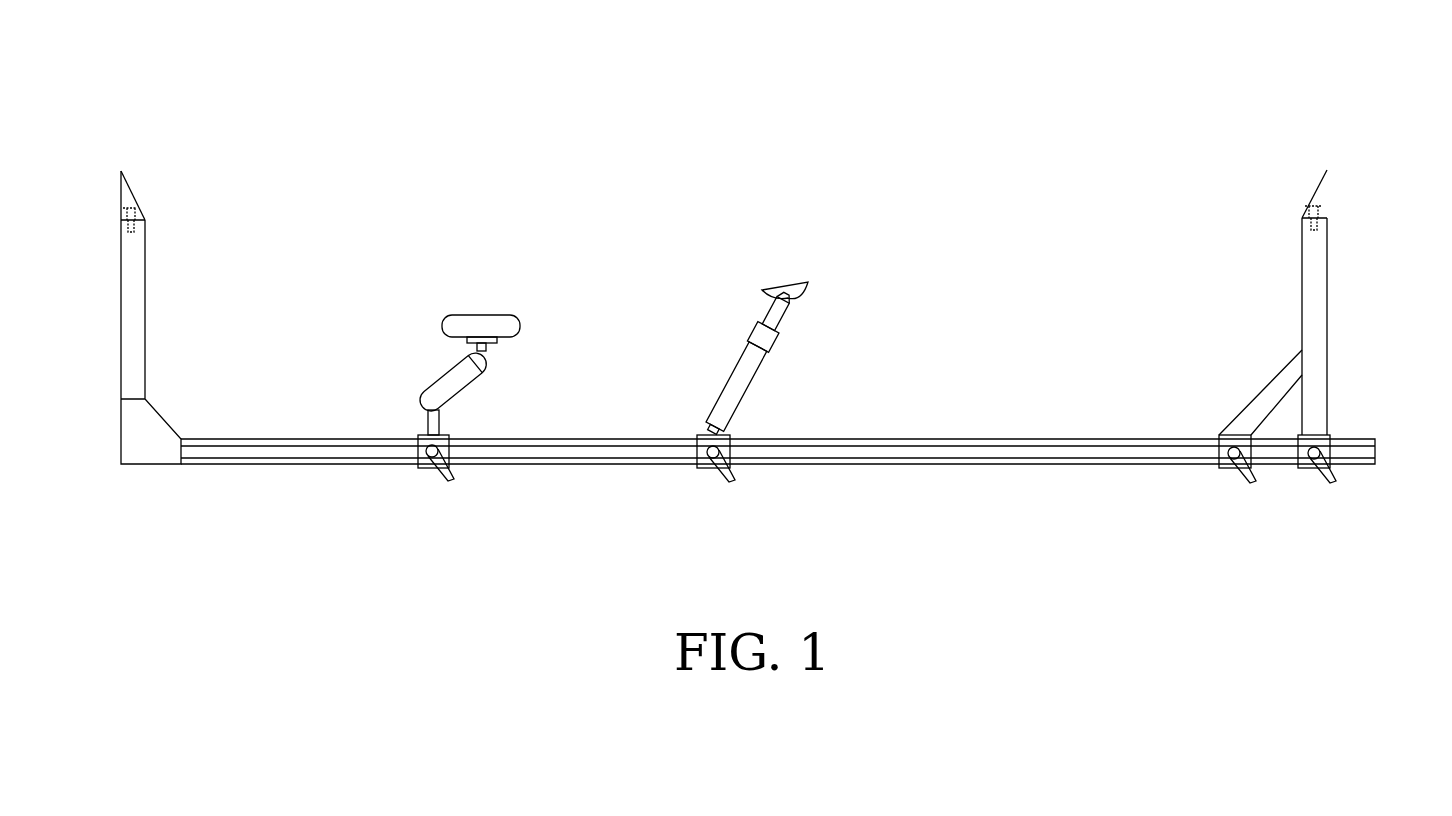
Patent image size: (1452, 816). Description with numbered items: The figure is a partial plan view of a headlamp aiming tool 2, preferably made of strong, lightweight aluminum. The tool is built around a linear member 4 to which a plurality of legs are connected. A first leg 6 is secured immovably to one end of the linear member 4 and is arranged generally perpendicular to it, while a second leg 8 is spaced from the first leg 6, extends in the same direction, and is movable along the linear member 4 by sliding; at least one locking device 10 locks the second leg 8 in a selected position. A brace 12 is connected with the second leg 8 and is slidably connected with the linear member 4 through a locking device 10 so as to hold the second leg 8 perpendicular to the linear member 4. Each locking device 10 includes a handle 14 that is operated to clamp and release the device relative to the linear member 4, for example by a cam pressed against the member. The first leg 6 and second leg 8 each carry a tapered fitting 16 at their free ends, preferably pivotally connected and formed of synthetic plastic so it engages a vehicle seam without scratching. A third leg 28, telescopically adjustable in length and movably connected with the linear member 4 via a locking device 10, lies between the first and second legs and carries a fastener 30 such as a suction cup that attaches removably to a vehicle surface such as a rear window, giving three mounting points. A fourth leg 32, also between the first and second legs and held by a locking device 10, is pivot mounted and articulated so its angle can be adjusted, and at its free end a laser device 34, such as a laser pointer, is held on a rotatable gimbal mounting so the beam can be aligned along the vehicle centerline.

The headlamp aiming tool 2 is at (937, 180).
The linear member 4 is at (1010, 446).
The first leg 6 is at (132, 303).
The second leg 8 is at (1314, 312).
The locking device 10 is at (420, 468).
The brace 12 is at (1262, 405).
The handle 14 is at (452, 482).
The fitting 16 is at (132, 200).
The third leg 28 is at (733, 388).
The fastener 30 is at (778, 284).
The fourth leg 32 is at (450, 378).
The laser device 34 is at (478, 325).